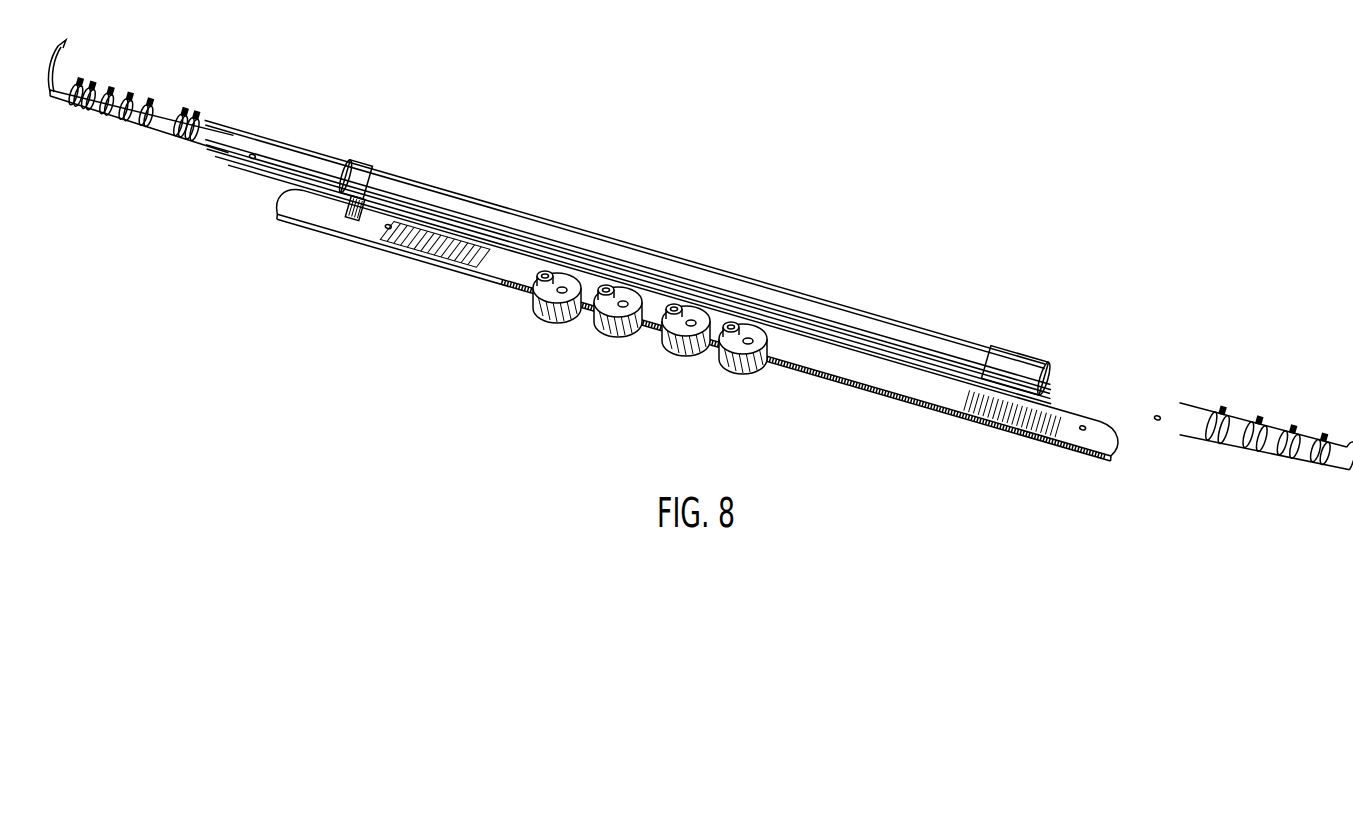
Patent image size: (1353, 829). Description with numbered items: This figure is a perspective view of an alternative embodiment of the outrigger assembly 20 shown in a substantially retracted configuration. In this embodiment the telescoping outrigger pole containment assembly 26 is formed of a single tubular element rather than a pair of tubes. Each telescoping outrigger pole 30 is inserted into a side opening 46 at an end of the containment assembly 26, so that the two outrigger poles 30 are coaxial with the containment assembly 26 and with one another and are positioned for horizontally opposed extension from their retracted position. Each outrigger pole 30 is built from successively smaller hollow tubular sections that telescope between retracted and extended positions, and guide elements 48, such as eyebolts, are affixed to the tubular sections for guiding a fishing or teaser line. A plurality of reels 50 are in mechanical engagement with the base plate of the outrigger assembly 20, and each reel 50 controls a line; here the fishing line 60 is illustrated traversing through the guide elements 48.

The outrigger assembly 20 is at (440, 278).
The telescoping outrigger pole containment assembly 26 is at (703, 276).
The telescoping outrigger pole 30 is at (173, 157).
The side opening 46 is at (348, 168).
The means for guiding a fishing or teaser line 48 is at (92, 123).
The reels 50 is at (753, 360).
The fishing line 60 is at (870, 370).